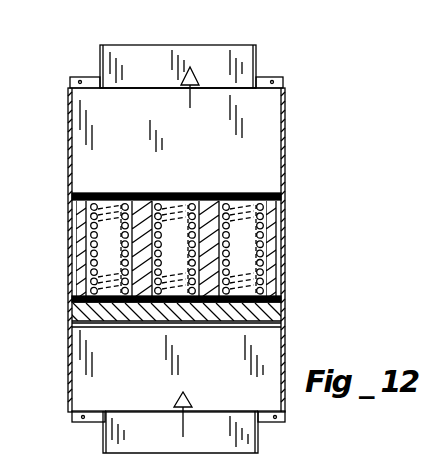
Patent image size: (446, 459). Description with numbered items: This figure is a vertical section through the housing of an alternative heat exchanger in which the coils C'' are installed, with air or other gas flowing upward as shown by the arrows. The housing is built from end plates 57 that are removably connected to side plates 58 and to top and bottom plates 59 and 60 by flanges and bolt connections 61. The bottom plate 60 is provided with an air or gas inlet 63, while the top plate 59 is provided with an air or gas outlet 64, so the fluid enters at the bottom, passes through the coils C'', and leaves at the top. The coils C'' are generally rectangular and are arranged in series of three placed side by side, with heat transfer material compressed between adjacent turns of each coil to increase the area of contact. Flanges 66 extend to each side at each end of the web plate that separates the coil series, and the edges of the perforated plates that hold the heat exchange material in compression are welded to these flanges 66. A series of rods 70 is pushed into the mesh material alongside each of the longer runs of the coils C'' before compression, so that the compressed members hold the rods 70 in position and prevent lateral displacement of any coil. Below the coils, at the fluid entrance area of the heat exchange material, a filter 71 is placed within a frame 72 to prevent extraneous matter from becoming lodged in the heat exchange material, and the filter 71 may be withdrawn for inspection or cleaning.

The end plate 57 is at (196, 131).
The side plate 58 is at (68, 133).
The top plate 59 is at (273, 90).
The bottom plate 60 is at (272, 406).
The flanges and bolt connections 61 is at (80, 78).
The air or gas inlet 63 is at (100, 440).
The air or gas outlet 64 is at (260, 57).
The flange 66 is at (386, 452).
The rod 70 is at (86, 238).
The filter 71 is at (178, 313).
The frame 72 is at (284, 302).
The coil C'' is at (184, 226).